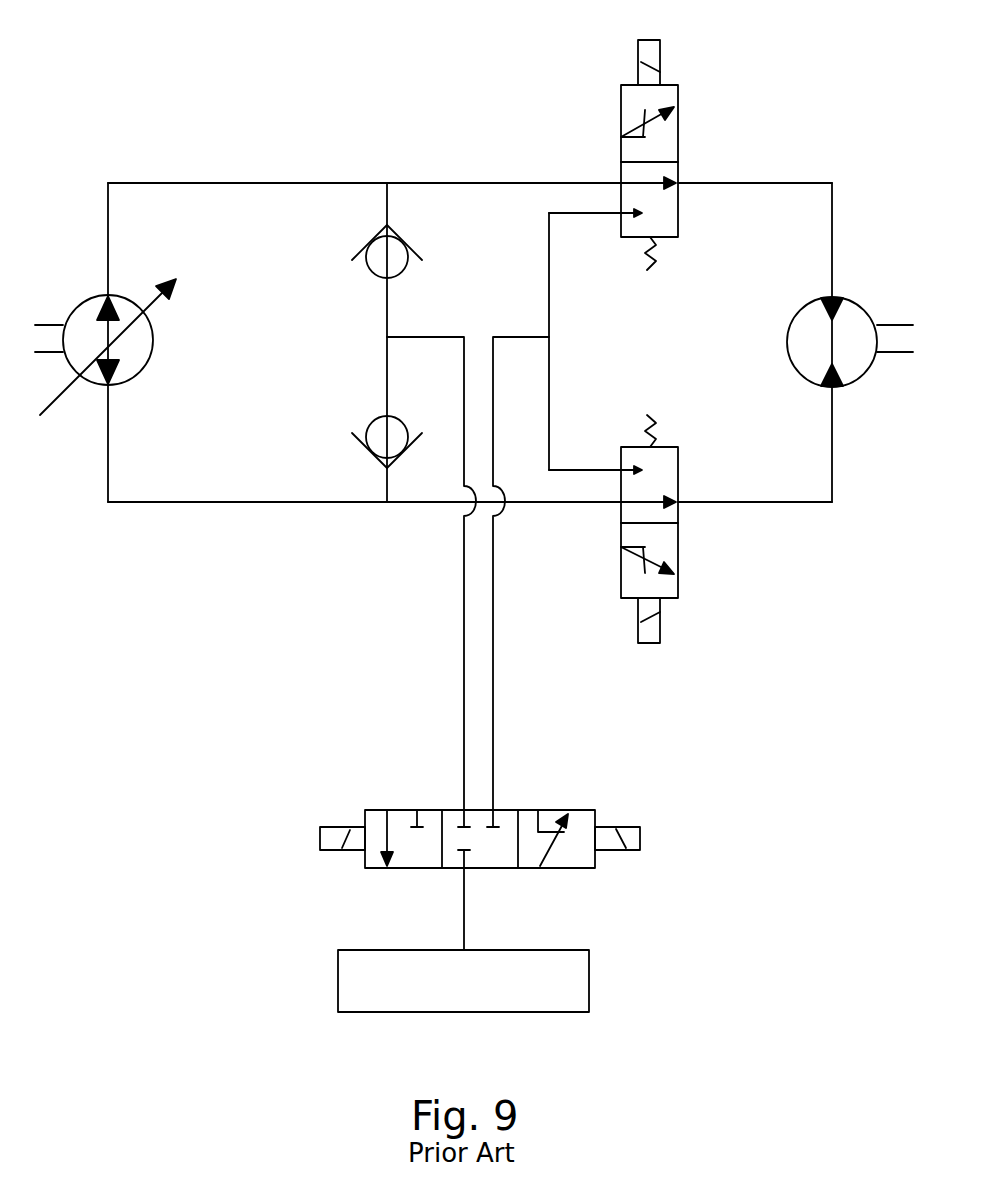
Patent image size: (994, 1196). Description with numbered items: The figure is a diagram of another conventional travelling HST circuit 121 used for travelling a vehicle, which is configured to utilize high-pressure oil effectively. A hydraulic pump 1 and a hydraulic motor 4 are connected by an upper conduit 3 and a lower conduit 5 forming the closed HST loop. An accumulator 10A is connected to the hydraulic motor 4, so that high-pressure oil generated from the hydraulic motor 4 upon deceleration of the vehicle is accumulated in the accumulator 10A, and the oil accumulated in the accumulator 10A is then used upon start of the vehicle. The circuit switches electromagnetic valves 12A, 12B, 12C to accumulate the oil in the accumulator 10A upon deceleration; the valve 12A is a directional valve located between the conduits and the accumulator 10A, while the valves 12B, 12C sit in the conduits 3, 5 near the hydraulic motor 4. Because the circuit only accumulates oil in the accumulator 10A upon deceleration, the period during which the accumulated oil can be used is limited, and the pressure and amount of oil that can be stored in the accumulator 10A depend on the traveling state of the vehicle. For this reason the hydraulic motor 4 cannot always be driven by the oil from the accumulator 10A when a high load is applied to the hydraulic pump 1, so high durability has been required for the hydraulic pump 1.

The hydraulic circuit (prior art) 121 is at (236, 126).
The hydraulic pump 1 is at (142, 376).
The first conduit 3 is at (471, 182).
The hydraulic motor 4 is at (861, 376).
The second conduit 5 is at (250, 503).
The electromagnetic valve 12A is at (578, 810).
The electromagnetic valve 12B is at (679, 133).
The electromagnetic valve 12C is at (679, 530).
The accumulator 10A is at (578, 950).